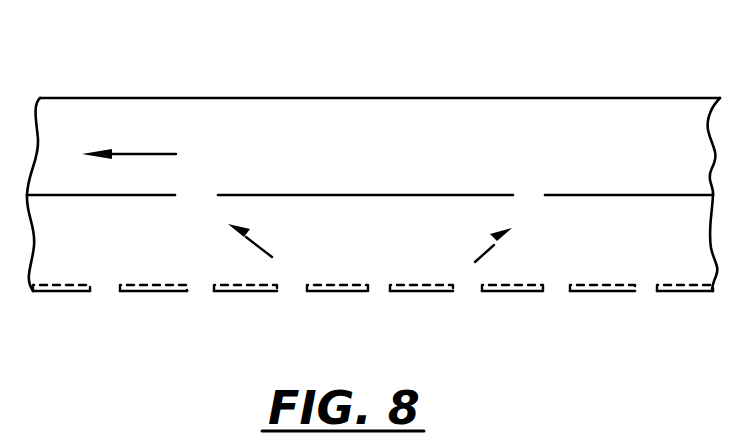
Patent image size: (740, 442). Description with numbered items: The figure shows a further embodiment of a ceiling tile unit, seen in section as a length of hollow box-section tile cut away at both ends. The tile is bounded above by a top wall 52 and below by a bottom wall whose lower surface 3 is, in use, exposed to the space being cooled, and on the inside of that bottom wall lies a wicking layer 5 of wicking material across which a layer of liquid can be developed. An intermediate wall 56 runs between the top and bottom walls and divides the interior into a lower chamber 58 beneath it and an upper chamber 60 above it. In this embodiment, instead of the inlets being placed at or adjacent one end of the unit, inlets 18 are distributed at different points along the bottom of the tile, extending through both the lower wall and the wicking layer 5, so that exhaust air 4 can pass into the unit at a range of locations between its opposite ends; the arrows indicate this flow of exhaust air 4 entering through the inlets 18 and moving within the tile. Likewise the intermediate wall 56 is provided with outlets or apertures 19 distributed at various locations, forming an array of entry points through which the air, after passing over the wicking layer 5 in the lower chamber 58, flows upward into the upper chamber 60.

The top wall 52 is at (445, 52).
The upper chamber 60 is at (373, 146).
The lower chamber 58 is at (372, 243).
The intermediate wall 56 is at (316, 194).
The apertures 19 is at (200, 192).
The exhaust air 4 is at (297, 203).
The inlets 18 is at (290, 292).
The lower surface 3 is at (416, 294).
The wicking layer 5 is at (427, 285).